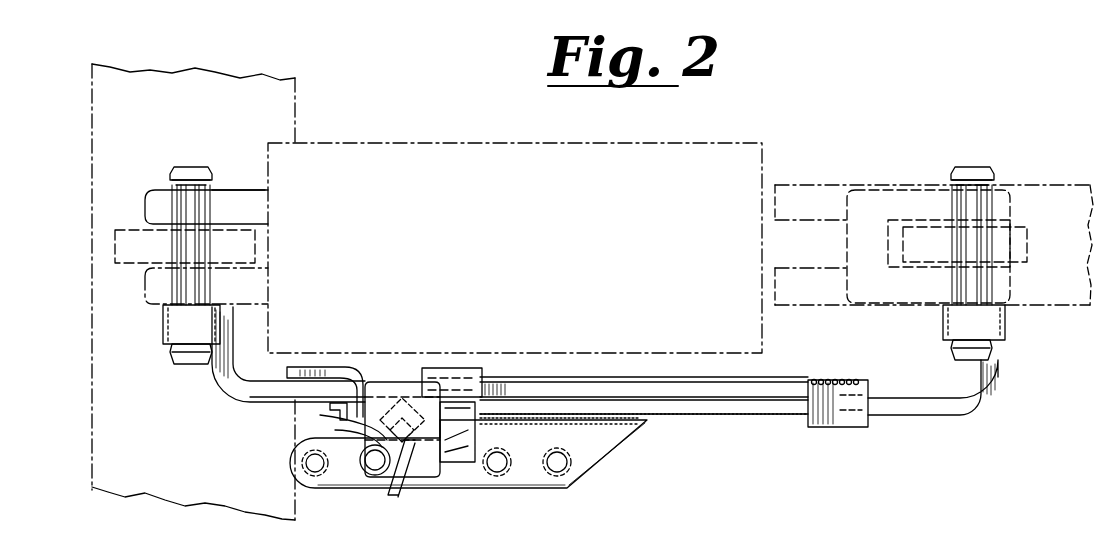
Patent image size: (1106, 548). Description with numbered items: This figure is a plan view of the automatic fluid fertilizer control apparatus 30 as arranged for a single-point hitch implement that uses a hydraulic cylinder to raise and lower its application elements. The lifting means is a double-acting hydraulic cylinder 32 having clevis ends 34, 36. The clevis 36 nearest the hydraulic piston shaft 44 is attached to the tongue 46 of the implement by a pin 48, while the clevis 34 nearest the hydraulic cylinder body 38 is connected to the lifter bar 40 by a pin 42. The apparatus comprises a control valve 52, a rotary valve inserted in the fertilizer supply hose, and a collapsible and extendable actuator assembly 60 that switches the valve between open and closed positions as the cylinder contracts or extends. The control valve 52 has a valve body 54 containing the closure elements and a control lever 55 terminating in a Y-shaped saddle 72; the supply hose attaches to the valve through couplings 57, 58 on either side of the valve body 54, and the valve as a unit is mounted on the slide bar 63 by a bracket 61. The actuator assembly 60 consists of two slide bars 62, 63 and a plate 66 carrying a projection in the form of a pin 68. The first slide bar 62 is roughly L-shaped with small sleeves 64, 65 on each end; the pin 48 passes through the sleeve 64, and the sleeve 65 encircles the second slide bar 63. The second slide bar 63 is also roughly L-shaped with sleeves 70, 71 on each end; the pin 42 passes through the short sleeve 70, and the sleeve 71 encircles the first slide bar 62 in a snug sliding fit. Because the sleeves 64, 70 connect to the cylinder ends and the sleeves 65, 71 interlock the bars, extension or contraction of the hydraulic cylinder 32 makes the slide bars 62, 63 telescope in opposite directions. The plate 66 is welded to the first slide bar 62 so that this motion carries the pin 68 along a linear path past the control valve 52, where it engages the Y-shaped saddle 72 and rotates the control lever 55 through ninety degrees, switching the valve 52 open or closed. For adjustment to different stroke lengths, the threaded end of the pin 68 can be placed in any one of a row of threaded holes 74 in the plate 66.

The automatic fluid fertilizer control apparatus 30 is at (797, 469).
The double-acting hydraulic cylinder 32 is at (705, 135).
The clevis 34 is at (163, 203).
The clevis 36 is at (879, 250).
The hydraulic cylinder body 38 is at (526, 257).
The lifter bar 40 is at (198, 432).
The pin 42 is at (186, 169).
The hydraulic piston shaft 44 is at (810, 255).
The tongue 46 is at (1072, 253).
The pin 48 is at (980, 170).
The control valve 52 is at (432, 484).
The valve body 54 is at (398, 385).
The control lever 55 is at (398, 482).
The coupling 57 is at (462, 455).
The coupling 58 is at (330, 413).
The collapsible and extendable actuator assembly 60 is at (740, 437).
The bracket 61 is at (345, 368).
The first slide bar 62 is at (697, 412).
The second slide bar 63 is at (522, 385).
The sleeve 64 is at (942, 325).
The sleeve 65 is at (465, 368).
The plate 66 is at (536, 455).
The pin 68 is at (335, 425).
The sleeve 70 is at (165, 333).
The sleeve 71 is at (845, 425).
The Y-shaped saddle 72 is at (405, 440).
The threaded holes 74 is at (502, 467).